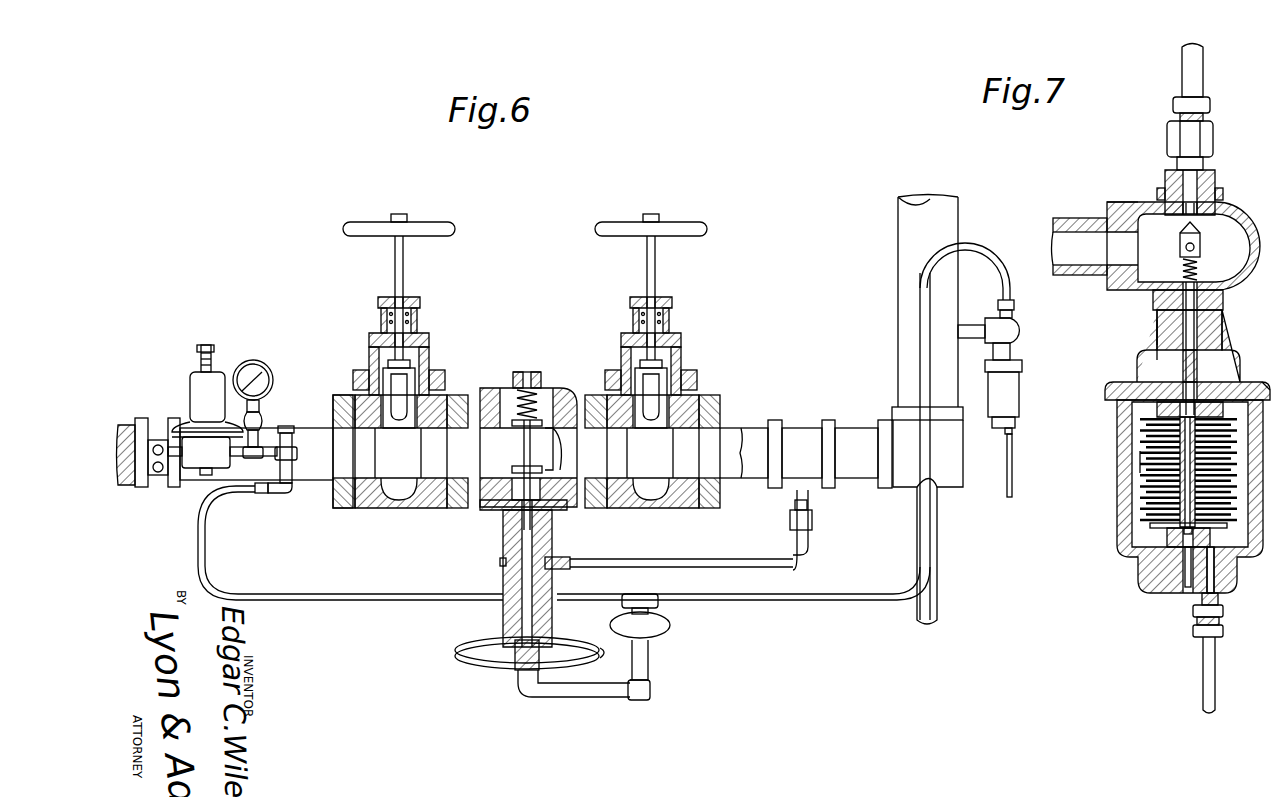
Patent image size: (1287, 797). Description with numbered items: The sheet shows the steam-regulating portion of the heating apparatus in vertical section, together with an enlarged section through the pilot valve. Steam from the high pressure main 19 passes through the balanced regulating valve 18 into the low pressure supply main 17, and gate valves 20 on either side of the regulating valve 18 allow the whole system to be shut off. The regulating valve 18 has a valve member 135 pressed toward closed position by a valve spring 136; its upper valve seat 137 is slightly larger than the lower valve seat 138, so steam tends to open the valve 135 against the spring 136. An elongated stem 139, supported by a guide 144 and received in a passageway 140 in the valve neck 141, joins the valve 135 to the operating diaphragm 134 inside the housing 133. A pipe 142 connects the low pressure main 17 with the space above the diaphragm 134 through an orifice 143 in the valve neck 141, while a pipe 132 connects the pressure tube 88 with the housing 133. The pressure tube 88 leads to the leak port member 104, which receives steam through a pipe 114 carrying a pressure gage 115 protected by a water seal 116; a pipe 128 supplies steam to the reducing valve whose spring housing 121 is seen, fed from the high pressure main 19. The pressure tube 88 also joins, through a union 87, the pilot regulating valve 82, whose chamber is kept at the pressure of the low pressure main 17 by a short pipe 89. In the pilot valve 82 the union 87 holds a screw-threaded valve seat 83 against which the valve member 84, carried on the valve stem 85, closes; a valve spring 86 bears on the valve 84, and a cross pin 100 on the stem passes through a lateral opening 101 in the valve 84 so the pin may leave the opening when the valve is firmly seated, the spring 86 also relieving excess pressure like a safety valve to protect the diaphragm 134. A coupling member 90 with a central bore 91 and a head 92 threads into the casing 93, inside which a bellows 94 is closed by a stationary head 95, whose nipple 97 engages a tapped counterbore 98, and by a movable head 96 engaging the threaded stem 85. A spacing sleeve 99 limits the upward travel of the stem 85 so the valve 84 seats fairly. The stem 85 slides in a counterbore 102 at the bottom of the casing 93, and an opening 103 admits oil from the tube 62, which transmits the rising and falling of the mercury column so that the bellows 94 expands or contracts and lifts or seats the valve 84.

In FIG. 6, the low pressure supply main 17 is at (750, 437).
In FIG. 6, the reducing valve 18 is at (462, 510).
In FIG. 6, the high pressure main 19 is at (305, 435).
In FIG. 6, the gate valve 20 is at (436, 358).
In FIG. 6, the tube 62 is at (1013, 462).
In FIG. 7, the tube 62 is at (1216, 674).
In FIG. 6, the pilot regulating valve 82 is at (1014, 336).
In FIG. 7, the pilot regulating valve 82 is at (1128, 206).
In FIG. 7, the valve seat 83 is at (1238, 220).
In FIG. 7, the valve member 84 is at (1201, 240).
In FIG. 7, the valve stem 85 is at (1199, 328).
In FIG. 7, the valve spring 86 is at (1199, 267).
In FIG. 7, the union 87 is at (1216, 182).
In FIG. 6, the pressure tube 88 is at (390, 600).
In FIG. 7, the pressure tube 88 is at (1196, 68).
In FIG. 6, the pipe 89 is at (968, 330).
In FIG. 7, the pipe 89 is at (1068, 232).
In FIG. 7, the coupling member 90 is at (1226, 362).
In FIG. 7, the bore 91 is at (1158, 331).
In FIG. 7, the head 92 is at (1128, 388).
In FIG. 6, the casing 93 is at (1013, 394).
In FIG. 7, the casing 93 is at (1119, 527).
In FIG. 7, the bellows 94 is at (1140, 490).
In FIG. 7, the stationary head 95 is at (1142, 410).
In FIG. 7, the movable head 96 is at (1207, 541).
In FIG. 7, the screw-threaded nipple 97 is at (1246, 382).
In FIG. 7, the tapped counterbore 98 is at (1158, 360).
In FIG. 7, the spacing sleeve 99 is at (1141, 464).
In FIG. 7, the cross pin 100 is at (1184, 250).
In FIG. 7, the lateral opening 101 is at (1181, 238).
In FIG. 7, the counterbore 102 is at (1186, 582).
In FIG. 7, the opening 103 is at (1228, 576).
In FIG. 6, the leak port member 104 is at (293, 460).
In FIG. 6, the pipe 114 is at (238, 458).
In FIG. 6, the pressure gage 115 is at (263, 374).
In FIG. 6, the water seal 116 is at (262, 420).
In FIG. 6, the housing 121 is at (192, 389).
In FIG. 6, the pipe 128 is at (162, 480).
In FIG. 6, the pipe 132 is at (585, 698).
In FIG. 6, the housing 133 is at (486, 660).
In FIG. 6, the operating diaphragm 134 is at (572, 647).
In FIG. 6, the valve member 135 is at (520, 447).
In FIG. 6, the valve spring 136 is at (512, 382).
In FIG. 6, the upper valve seat 137 is at (553, 398).
In FIG. 6, the lower valve seat 138 is at (572, 505).
In FIG. 6, the elongated stem 139 is at (503, 560).
In FIG. 6, the passageway 140 is at (525, 604).
In FIG. 6, the valve neck 141 is at (500, 587).
In FIG. 6, the pipe 142 is at (686, 556).
In FIG. 6, the orifice 143 is at (553, 566).
In FIG. 6, the guide 144 is at (522, 508).